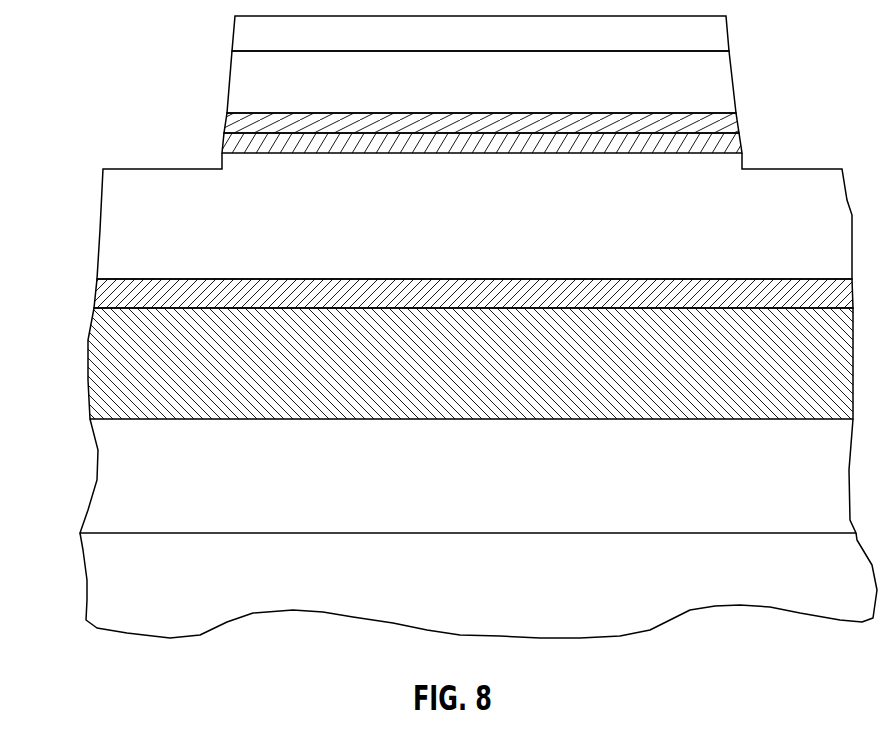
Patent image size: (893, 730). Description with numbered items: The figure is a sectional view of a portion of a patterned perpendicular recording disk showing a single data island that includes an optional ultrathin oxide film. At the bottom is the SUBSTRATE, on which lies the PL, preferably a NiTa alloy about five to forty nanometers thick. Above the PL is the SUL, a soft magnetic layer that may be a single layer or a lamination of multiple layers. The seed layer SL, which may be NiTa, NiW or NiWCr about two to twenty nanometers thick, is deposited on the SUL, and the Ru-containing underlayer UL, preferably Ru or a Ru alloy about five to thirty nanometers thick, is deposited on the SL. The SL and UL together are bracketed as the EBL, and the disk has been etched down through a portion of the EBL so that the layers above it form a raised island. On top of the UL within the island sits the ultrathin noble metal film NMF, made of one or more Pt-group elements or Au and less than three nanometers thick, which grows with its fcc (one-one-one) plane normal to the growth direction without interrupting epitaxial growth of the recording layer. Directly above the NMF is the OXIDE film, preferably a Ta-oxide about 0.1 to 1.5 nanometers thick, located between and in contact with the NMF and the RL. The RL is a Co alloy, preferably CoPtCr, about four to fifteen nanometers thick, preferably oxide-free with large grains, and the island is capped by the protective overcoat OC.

The overcoat OC is at (480, 33).
The recording layer RL is at (481, 82).
The oxide film OXIDE is at (226, 124).
The noble metal film NMF is at (729, 143).
The exchange break layer EBL is at (435, 232).
The underlayer UL is at (474, 216).
The seed layer SL is at (473, 295).
The soft underlayer SUL is at (470, 363).
The pre-seed layer PL is at (468, 476).
The substrate SUBSTRATE is at (478, 585).